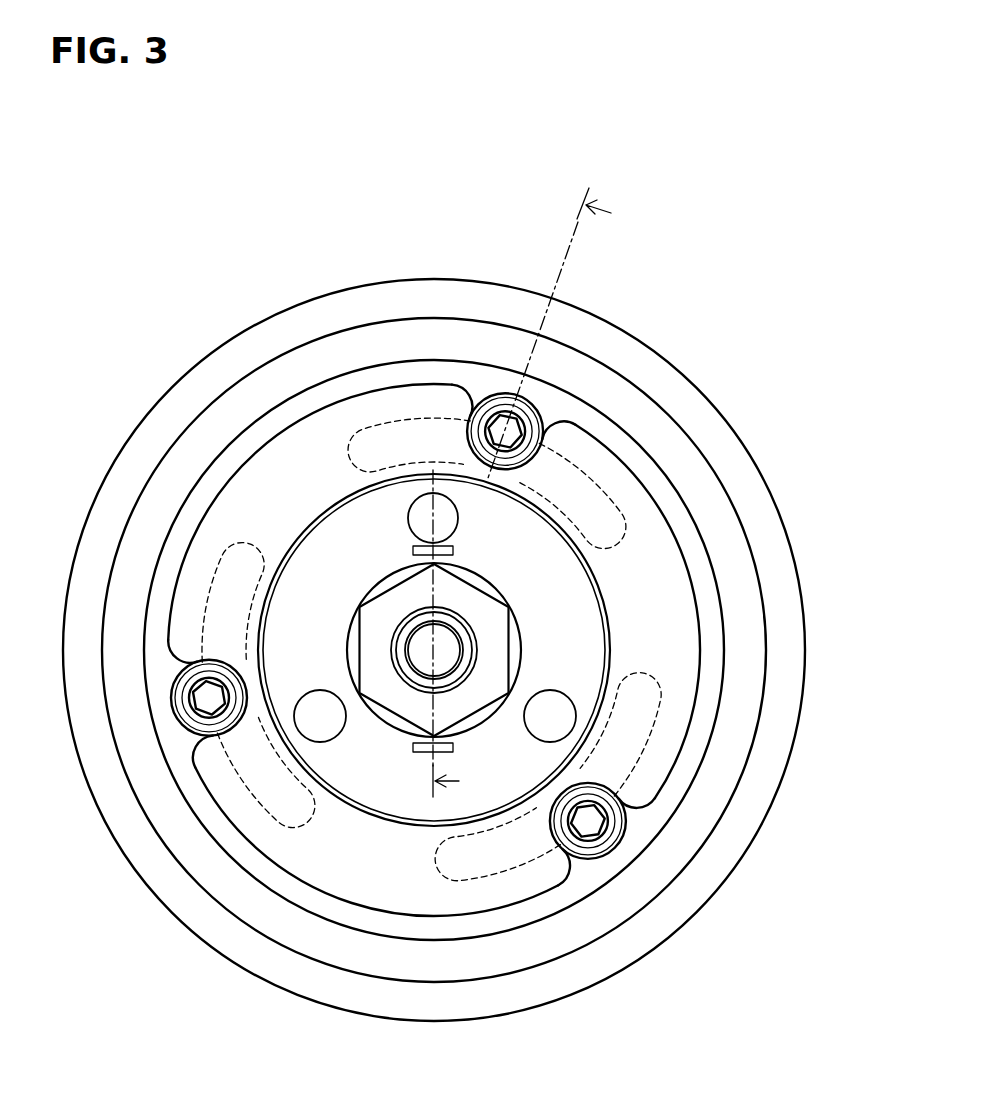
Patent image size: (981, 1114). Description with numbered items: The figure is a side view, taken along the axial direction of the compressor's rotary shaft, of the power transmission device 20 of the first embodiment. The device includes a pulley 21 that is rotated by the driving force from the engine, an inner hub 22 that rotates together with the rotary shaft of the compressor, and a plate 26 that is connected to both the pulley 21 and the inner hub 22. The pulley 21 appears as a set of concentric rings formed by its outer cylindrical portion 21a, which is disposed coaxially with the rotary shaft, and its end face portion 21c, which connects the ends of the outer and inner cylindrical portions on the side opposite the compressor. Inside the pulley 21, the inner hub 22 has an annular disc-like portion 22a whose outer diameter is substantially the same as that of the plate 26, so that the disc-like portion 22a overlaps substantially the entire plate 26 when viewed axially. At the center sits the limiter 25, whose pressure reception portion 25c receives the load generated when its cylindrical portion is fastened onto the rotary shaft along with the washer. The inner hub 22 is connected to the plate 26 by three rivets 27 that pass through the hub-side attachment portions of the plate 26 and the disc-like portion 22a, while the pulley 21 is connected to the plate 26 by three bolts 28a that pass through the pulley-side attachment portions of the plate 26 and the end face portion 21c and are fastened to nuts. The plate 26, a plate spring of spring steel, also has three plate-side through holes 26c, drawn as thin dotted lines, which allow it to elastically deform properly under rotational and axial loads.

The power transmission device 20 is at (688, 252).
The pulley 21 is at (434, 610).
The outer cylindrical portion 21a is at (423, 280).
The end face portion 21c is at (390, 332).
The inner hub 22 is at (367, 650).
The disc-like portion 22a is at (253, 508).
The limiter 25 is at (569, 548).
The pressure reception portion 25c is at (487, 633).
The plate 26 is at (178, 665).
The plate-side through holes 26c is at (210, 578).
The rivet 27 is at (426, 508).
The bolt 28a is at (518, 414).